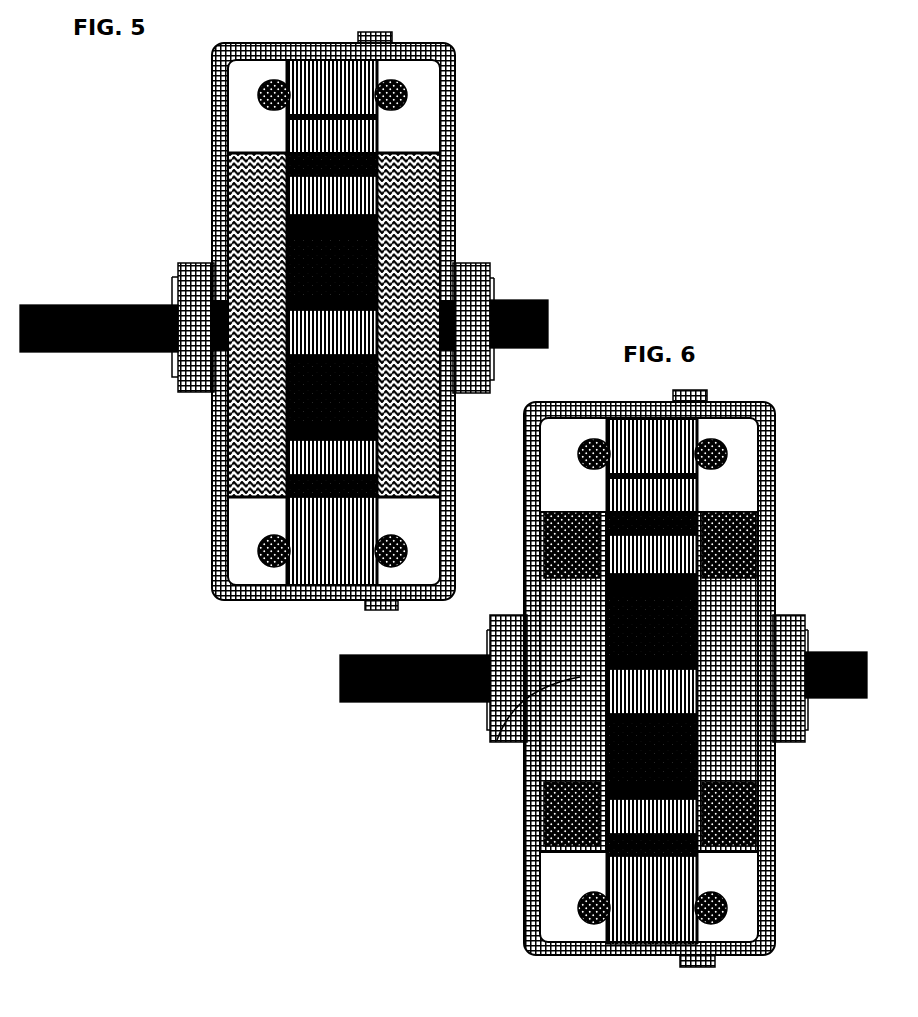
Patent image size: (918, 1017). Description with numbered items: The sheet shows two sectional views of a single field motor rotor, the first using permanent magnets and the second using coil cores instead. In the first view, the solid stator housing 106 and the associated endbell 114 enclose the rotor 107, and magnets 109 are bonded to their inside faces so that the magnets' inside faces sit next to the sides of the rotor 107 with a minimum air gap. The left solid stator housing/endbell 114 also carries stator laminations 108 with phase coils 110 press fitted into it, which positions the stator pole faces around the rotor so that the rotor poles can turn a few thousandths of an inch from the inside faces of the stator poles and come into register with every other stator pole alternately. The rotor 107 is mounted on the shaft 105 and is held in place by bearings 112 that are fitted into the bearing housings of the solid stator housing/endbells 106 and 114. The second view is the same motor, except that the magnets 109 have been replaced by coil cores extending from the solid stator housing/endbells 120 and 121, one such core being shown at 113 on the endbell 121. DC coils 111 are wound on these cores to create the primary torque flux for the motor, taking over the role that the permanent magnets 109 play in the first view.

In FIG. 5, the shaft 105 is at (115, 305).
In FIG. 6, the shaft 105 is at (410, 657).
In FIG. 5, the solid stator housing 106 is at (457, 248).
In FIG. 5, the rotor 107 is at (290, 130).
In FIG. 5, the stator laminations 108 is at (328, 55).
In FIG. 6, the stator laminations 108 is at (634, 410).
In FIG. 5, the magnets 109 is at (228, 155).
In FIG. 5, the phase coils 110 is at (262, 90).
In FIG. 6, the phase coils 110 is at (580, 448).
In FIG. 6, the DC coils 111 is at (558, 512).
In FIG. 5, the bearings 112 is at (172, 287).
In FIG. 6, the bearings 112 is at (487, 650).
In FIG. 6, the coil core 113 is at (497, 740).
In FIG. 5, the endbell 114 is at (215, 215).
In FIG. 6, the solid stator housing/endbell 120 is at (773, 560).
In FIG. 6, the solid stator housing/endbell 121 is at (530, 565).